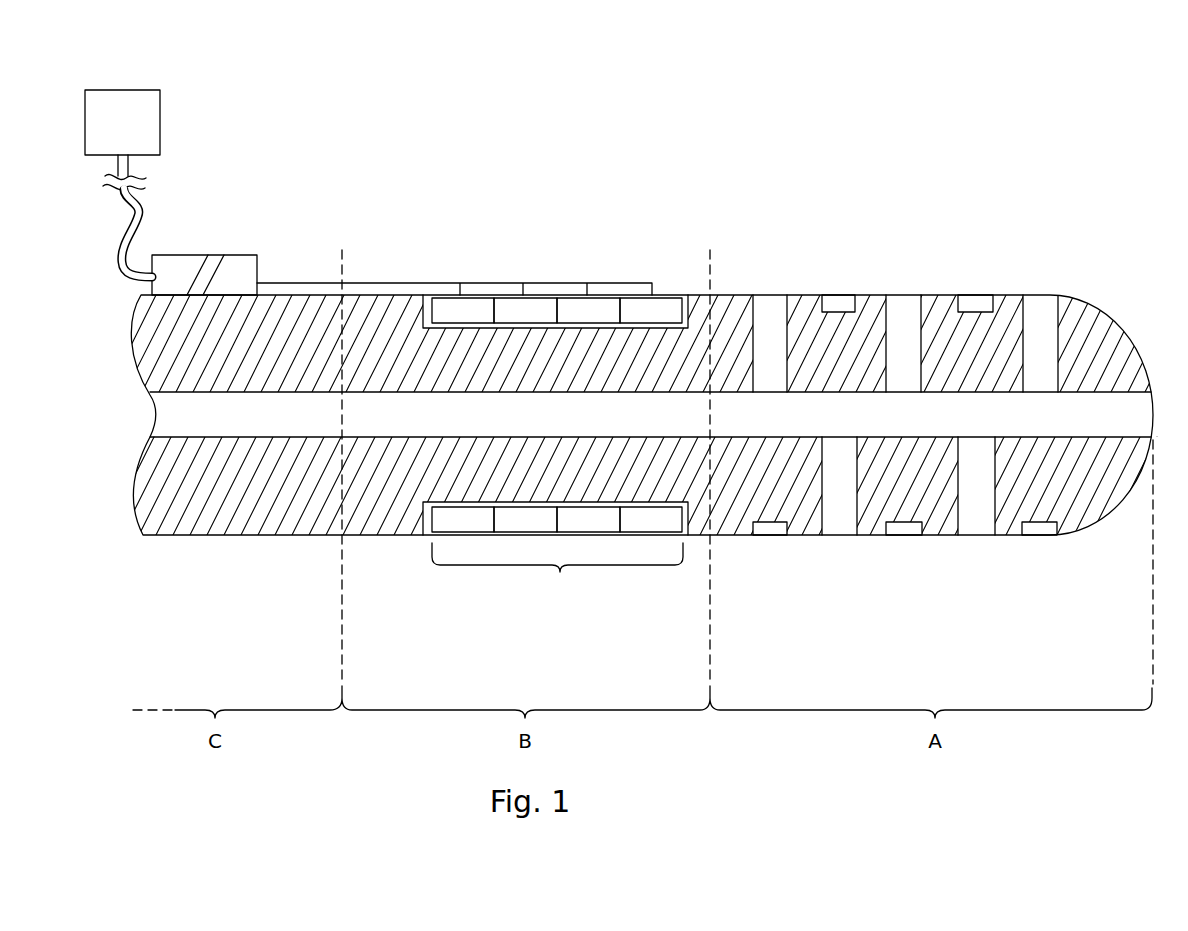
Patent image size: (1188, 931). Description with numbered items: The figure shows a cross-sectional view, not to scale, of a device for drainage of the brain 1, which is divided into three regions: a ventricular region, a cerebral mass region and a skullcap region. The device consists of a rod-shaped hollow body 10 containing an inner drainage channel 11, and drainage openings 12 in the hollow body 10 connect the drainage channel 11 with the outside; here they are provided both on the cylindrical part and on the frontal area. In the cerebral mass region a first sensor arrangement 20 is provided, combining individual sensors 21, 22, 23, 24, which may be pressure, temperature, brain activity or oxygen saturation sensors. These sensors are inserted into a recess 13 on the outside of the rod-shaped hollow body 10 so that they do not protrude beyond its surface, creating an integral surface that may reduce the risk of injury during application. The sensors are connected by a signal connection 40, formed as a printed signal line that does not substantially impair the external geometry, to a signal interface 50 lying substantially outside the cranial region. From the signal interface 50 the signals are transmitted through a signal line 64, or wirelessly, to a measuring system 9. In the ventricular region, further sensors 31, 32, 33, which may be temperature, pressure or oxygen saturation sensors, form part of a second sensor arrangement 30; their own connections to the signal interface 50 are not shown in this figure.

The device for drainage of the brain 1 is at (735, 152).
The measuring system 9 is at (122, 122).
The rod-shaped hollow body 10 is at (404, 537).
The inner drainage channel 11 is at (1037, 410).
The drainage opening 12 is at (763, 308).
The recess for receiving a sensor 13 is at (430, 313).
The first sensor arrangement 20 is at (557, 576).
The sensor of the first sensor arrangement 21 is at (463, 415).
The sensor of the first sensor arrangement 22 is at (843, 302).
The sensor of the first sensor arrangement 23 is at (978, 302).
The sensor of the first sensor arrangement 24 is at (651, 415).
The second sensor arrangement 30 is at (844, 570).
The sensor of the second sensor arrangement 31 is at (757, 540).
The sensor of the second sensor arrangement 32 is at (909, 540).
The sensor of the second sensor arrangement 33 is at (1029, 540).
The signal connection 40 is at (312, 282).
The signal interface 50 is at (244, 262).
The signal line 64 is at (143, 218).